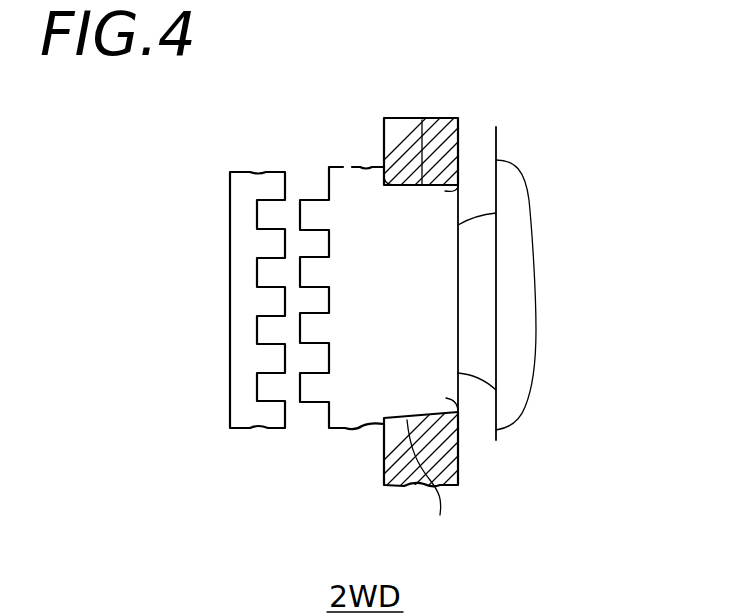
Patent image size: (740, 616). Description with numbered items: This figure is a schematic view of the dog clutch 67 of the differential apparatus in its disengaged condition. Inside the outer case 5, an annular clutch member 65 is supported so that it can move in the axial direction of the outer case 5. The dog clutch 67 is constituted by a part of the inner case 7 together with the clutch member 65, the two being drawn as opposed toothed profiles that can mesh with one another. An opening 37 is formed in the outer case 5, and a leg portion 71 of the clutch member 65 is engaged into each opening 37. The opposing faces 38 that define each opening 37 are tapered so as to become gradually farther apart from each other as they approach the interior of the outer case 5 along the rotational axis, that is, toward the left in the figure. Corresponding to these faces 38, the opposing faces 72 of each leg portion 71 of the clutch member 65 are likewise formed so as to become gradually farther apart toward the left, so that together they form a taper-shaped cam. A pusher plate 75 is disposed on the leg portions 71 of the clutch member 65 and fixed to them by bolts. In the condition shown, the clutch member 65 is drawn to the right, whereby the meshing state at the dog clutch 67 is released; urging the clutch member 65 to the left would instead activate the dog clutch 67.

The inner case 7 is at (257, 165).
The clutch member 65 is at (346, 163).
The outer case 5 is at (419, 114).
The opposing faces 72 is at (422, 185).
The opposing faces 38 is at (437, 191).
The leg portion 71 is at (437, 240).
The pusher plate 75 is at (480, 327).
The opening 37 is at (422, 395).
The dog clutch 67 is at (288, 452).